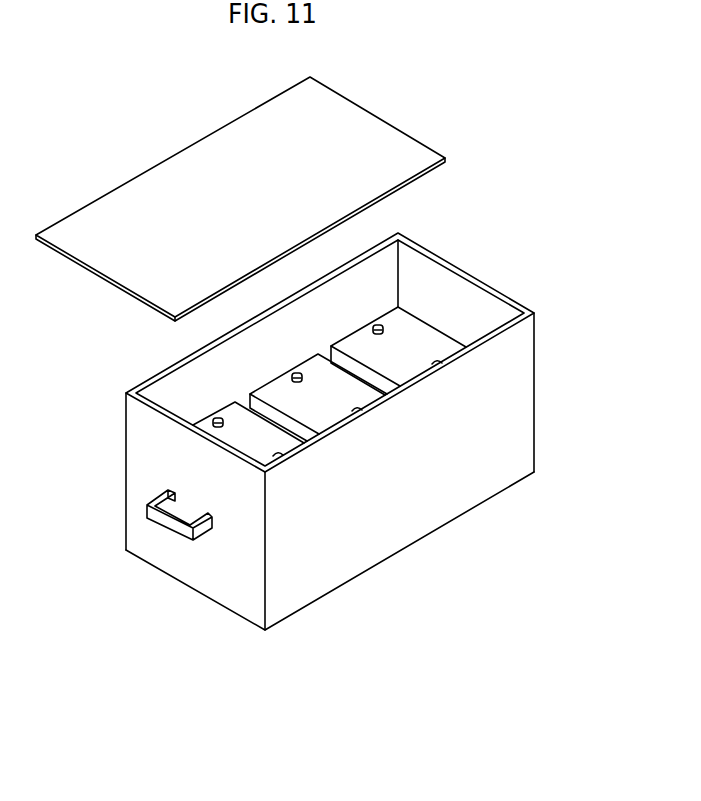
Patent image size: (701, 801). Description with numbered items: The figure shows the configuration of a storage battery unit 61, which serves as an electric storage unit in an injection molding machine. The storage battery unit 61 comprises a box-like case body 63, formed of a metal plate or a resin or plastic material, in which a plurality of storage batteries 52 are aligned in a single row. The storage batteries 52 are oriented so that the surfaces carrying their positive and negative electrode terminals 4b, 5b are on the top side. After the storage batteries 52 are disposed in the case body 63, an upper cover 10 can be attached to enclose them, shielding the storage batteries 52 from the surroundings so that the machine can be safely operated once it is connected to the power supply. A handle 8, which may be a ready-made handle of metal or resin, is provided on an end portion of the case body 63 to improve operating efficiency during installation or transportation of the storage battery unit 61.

The upper cover 10 is at (403, 142).
The storage battery 52 is at (408, 328).
The case body 63 is at (515, 398).
The storage battery unit 61 is at (332, 429).
The handle 8 is at (150, 523).
The negative electrode terminal 5b is at (217, 418).
The positive electrode terminal 4b is at (278, 457).